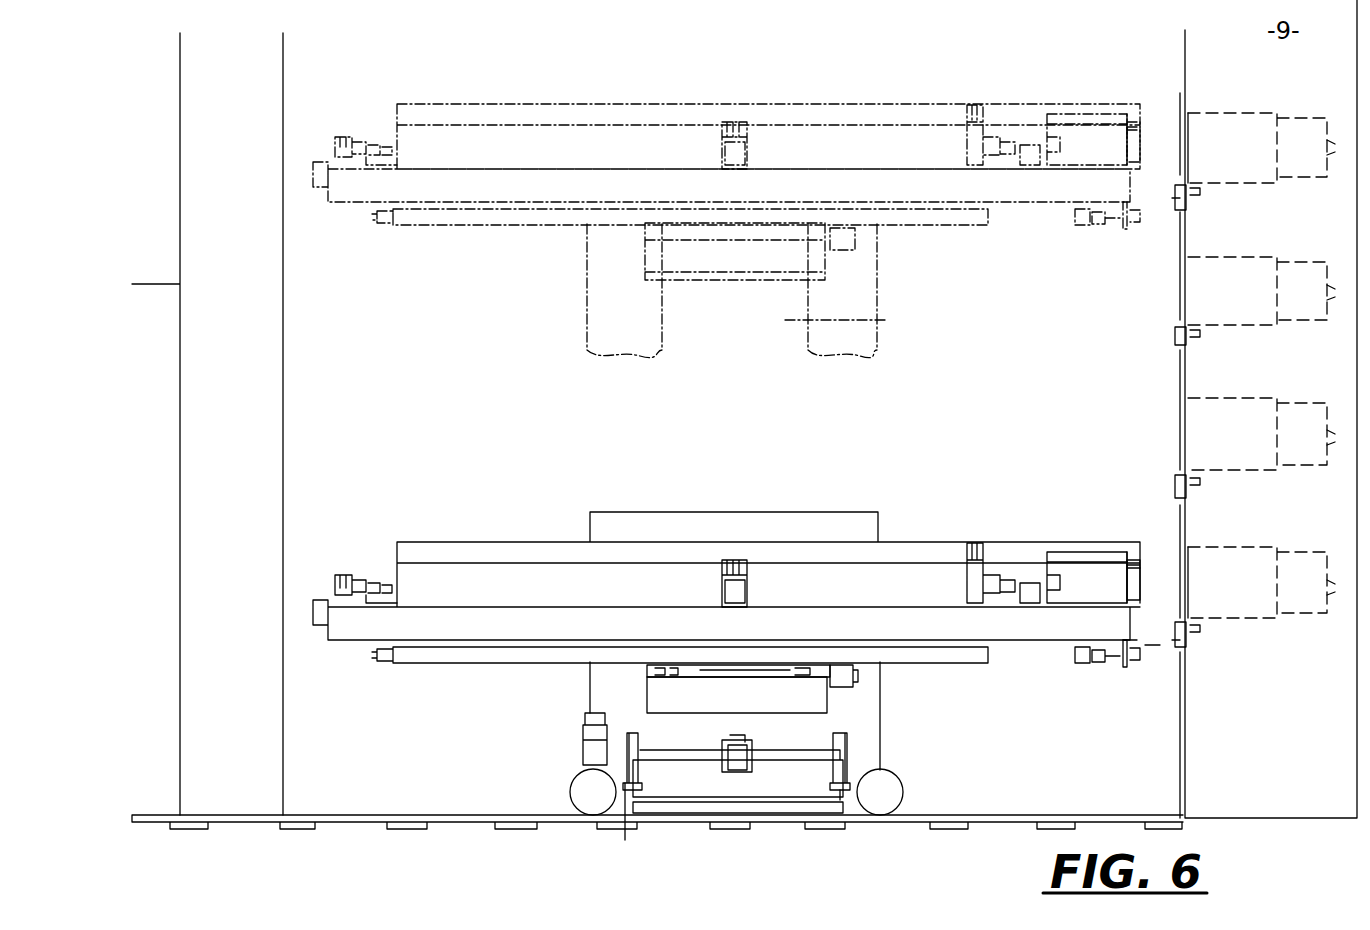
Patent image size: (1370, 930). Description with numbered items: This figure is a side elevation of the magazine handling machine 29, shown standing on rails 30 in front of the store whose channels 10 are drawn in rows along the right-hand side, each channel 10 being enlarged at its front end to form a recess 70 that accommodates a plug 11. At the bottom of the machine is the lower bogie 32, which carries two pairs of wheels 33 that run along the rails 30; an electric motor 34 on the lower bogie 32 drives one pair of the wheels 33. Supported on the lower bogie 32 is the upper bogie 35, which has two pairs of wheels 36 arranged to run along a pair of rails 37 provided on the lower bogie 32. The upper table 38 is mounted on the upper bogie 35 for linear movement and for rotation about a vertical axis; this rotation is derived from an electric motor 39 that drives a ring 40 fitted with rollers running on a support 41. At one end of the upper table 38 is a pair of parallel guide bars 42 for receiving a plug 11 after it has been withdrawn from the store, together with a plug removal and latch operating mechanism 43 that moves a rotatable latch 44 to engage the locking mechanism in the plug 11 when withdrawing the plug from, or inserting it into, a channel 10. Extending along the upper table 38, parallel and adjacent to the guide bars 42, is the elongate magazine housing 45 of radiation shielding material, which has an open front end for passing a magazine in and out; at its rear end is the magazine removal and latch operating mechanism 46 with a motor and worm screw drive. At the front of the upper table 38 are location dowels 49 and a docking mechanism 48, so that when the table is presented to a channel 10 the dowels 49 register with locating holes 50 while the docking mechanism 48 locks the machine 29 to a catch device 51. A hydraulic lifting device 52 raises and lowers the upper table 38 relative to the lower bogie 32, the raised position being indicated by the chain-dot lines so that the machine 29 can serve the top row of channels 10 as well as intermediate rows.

The channel 10 is at (1308, 112).
The plug 11 is at (1064, 120).
The magazine handling machine 29 is at (758, 98).
The rails 30 is at (384, 815).
The lower bogie 32 is at (775, 803).
The wheels 33 is at (590, 800).
The electric motor 34 is at (590, 748).
The upper bogie 35 is at (872, 300).
The wheels 36 is at (625, 765).
The rails 37 is at (915, 772).
The upper table 38 is at (357, 632).
The electric motor 39 is at (858, 676).
The ring 40 is at (647, 670).
The support 41 is at (655, 702).
The guide bars 42 is at (1092, 150).
The plug removal and latch operating mechanism 43 is at (1010, 570).
The rotatable latch 44 is at (1135, 580).
The magazine housing 45 is at (891, 104).
The magazine removal and latch operating mechanism 46 is at (352, 566).
The docking mechanism 48 is at (1137, 660).
The location dowels 49 is at (1070, 225).
The locating holes 50 is at (1200, 192).
The catch device 51 is at (1170, 208).
The hydraulic lifting device 52 is at (885, 320).
The recess 70 is at (1222, 135).